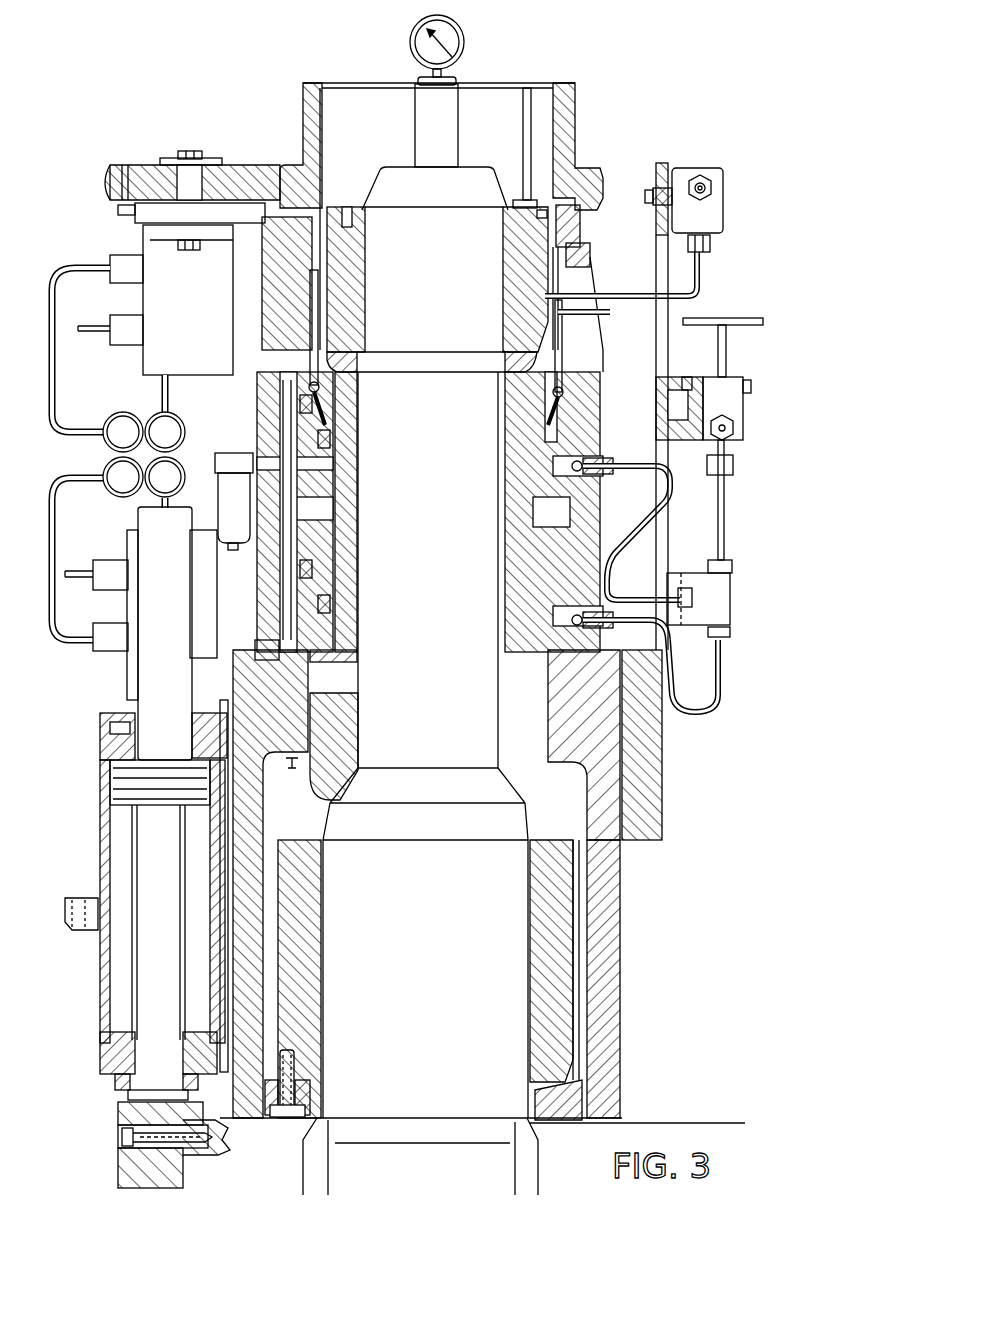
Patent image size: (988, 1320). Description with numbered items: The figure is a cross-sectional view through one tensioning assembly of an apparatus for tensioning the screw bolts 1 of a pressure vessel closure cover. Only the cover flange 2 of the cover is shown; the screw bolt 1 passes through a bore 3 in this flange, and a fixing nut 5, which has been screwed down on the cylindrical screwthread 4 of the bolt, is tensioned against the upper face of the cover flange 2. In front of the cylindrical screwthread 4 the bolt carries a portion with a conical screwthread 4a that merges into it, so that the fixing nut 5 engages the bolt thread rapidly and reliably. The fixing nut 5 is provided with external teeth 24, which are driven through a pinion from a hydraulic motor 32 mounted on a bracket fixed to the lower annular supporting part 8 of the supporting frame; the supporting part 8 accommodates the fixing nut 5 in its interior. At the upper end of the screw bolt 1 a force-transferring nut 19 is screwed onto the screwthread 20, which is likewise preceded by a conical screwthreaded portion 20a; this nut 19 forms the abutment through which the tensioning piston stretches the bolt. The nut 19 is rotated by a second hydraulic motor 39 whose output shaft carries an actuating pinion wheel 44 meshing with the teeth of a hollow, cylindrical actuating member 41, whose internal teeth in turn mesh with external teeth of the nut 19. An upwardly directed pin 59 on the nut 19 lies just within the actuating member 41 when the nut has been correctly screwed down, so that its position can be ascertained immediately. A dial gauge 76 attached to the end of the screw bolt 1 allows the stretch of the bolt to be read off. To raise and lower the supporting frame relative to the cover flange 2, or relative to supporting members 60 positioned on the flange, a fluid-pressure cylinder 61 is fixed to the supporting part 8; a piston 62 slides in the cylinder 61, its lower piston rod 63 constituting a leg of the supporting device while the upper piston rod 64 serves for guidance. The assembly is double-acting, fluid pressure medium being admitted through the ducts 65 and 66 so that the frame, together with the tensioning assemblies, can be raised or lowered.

The screw bolt 1 is at (476, 1017).
The cover flange 2 is at (708, 1128).
The bore 3 is at (540, 1163).
The cylindrical screwthread 4 is at (535, 910).
The conical screwthread portion 4a is at (527, 812).
The fixing nut 5 is at (562, 966).
The lower annular supporting part 8 is at (622, 862).
The nut 19 is at (512, 245).
The screwthread 20 is at (505, 323).
The conical screwthread portion 20a is at (498, 190).
The external teeth 24 is at (580, 1002).
The hydraulic motor 32 is at (212, 608).
The hydraulic motor 39 is at (221, 334).
The hollow cylindrical actuating member 41 is at (300, 127).
The actuating pinion wheel 44 is at (147, 165).
The pin 59 is at (531, 106).
The supporting member 60 is at (118, 1165).
The cylinder 61 is at (100, 860).
The piston 62 is at (110, 785).
The lower piston rod 63 is at (140, 982).
The piston rod 64 is at (140, 665).
The duct 65 is at (110, 735).
The duct 66 is at (100, 1060).
The dial gauge 76 is at (465, 40).